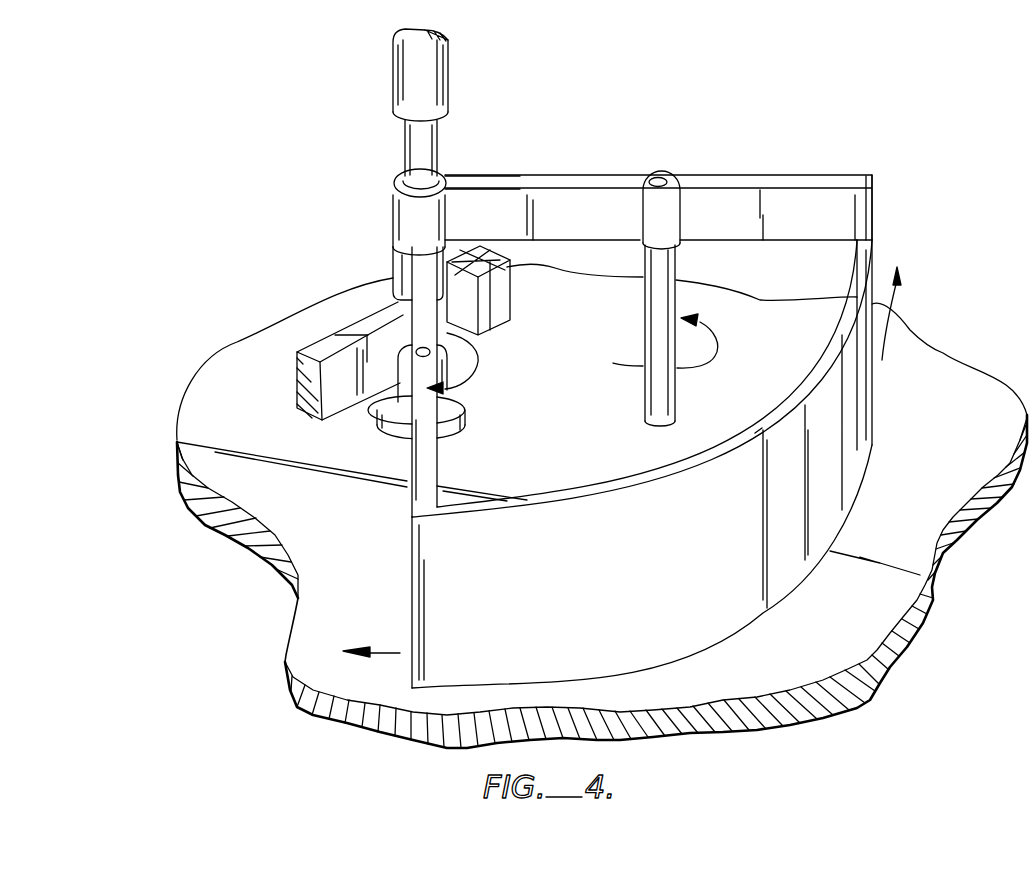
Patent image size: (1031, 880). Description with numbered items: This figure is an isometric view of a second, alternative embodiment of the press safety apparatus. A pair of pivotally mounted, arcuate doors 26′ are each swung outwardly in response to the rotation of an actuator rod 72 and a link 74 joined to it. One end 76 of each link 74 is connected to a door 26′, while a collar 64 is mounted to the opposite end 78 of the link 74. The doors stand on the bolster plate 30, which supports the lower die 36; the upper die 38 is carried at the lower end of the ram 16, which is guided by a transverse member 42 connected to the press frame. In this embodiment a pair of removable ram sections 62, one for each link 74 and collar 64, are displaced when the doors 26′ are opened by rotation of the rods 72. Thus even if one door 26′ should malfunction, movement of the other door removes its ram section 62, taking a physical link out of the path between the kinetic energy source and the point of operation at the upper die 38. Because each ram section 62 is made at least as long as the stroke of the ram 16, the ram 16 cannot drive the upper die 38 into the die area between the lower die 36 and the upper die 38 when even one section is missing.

The ram 16 is at (440, 80).
The removable ram section 62 is at (403, 176).
The collar 64 is at (383, 242).
The opposite end of link 78 is at (493, 181).
The link 74 is at (752, 177).
The one end of link 76 is at (853, 182).
The actuator rod 72 is at (665, 303).
The transverse member 42 is at (512, 318).
The upper die 38 is at (466, 363).
The lower die 36 is at (466, 408).
The bolster plate 30 is at (297, 508).
The arcuate door 26′ is at (708, 626).